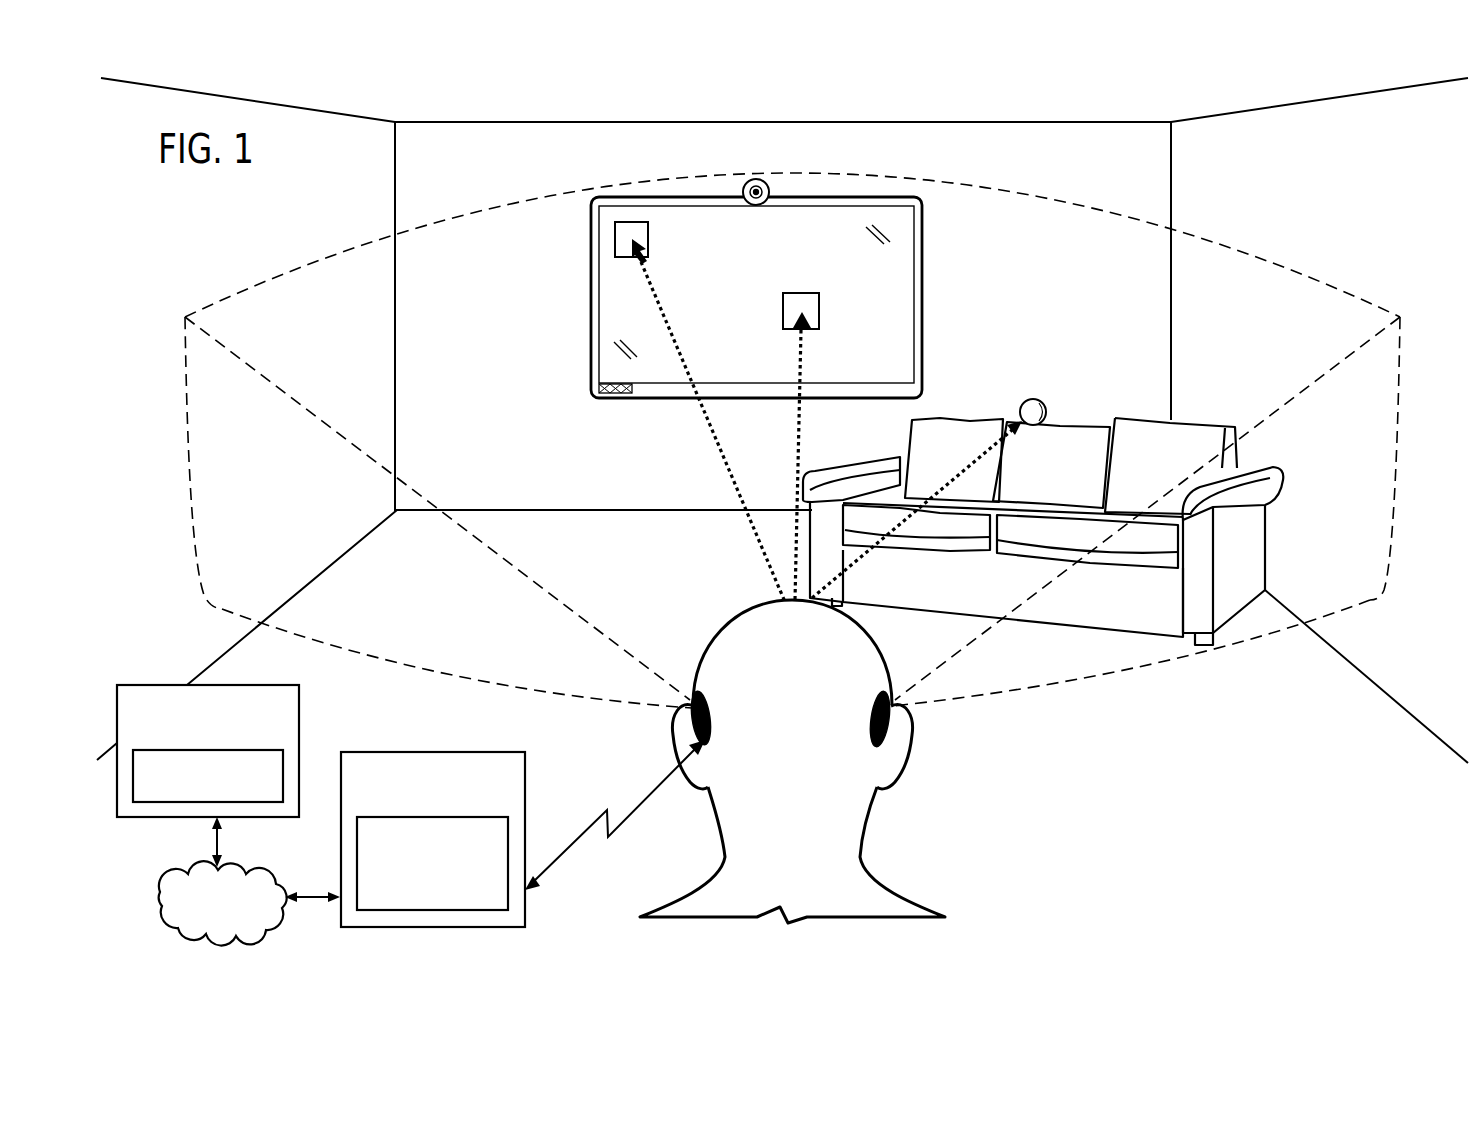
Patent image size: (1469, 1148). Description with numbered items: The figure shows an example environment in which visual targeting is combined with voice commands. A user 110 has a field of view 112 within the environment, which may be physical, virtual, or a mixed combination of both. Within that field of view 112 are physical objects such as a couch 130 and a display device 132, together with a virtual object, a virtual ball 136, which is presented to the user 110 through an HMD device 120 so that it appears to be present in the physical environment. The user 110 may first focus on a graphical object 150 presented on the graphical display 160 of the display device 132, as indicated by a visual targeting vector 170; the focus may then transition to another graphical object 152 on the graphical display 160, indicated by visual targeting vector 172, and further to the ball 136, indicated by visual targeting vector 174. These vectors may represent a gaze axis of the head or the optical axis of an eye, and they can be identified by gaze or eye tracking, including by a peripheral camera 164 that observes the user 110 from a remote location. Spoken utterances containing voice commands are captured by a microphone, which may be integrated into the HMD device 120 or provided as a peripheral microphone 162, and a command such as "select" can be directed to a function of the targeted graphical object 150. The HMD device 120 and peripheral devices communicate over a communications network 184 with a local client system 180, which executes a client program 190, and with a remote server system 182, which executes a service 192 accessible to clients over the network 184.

The user 110 is at (863, 813).
The field of view 112 is at (485, 208).
The HMD device 120 is at (700, 720).
The couch 130 is at (1250, 538).
The display device 132 is at (918, 285).
The virtual ball 136 is at (1040, 400).
The graphical object 150 is at (613, 242).
The graphical object 152 is at (806, 302).
The graphical display 160 is at (905, 340).
The microphone 162 is at (599, 388).
The camera 164 is at (758, 183).
The visual targeting vector 170 is at (713, 432).
The visual targeting vector 172 is at (802, 465).
The visual targeting vector 174 is at (917, 509).
The client system 180 is at (420, 808).
The server system 182 is at (195, 741).
The communications network 184 is at (204, 931).
The client program 190 is at (420, 900).
The service 192 is at (265, 785).